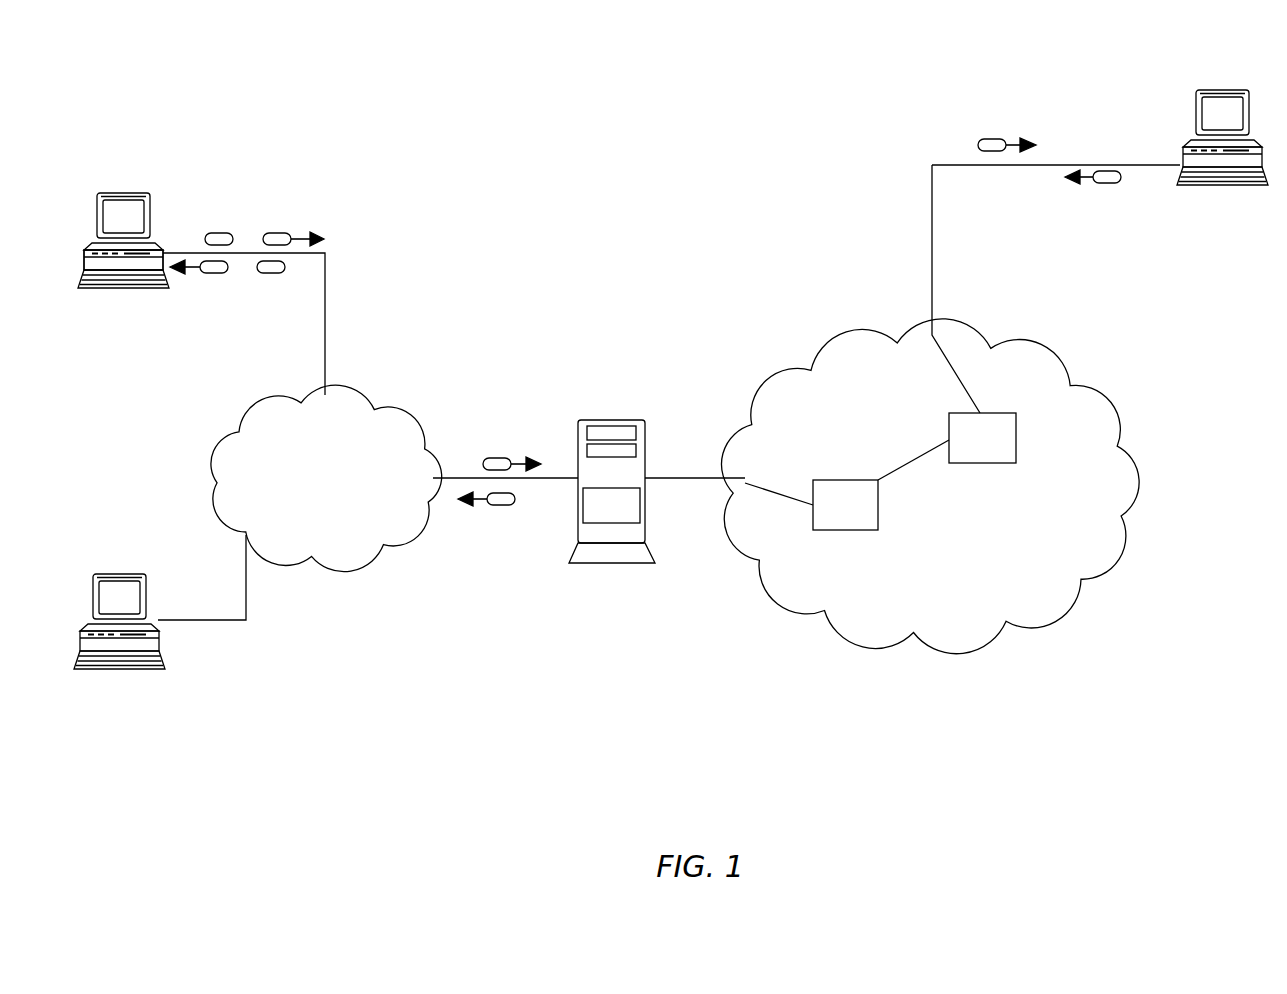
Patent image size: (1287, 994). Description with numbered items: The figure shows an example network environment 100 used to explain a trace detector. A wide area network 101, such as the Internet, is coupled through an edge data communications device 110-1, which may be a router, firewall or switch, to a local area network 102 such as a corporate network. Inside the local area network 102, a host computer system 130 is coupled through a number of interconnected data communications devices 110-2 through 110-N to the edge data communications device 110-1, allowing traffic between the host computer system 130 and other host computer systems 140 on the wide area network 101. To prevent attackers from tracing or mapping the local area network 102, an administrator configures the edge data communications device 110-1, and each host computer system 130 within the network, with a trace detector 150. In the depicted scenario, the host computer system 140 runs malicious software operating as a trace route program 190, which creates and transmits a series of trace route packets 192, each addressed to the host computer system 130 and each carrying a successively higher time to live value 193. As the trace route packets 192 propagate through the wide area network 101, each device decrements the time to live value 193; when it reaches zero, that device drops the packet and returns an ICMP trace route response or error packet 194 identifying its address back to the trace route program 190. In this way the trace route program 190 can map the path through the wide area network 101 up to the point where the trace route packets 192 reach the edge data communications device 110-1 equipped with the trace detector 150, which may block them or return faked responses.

The network environment 100 is at (550, 115).
The wide area network 101 is at (326, 478).
The local area network 102 is at (930, 486).
The edge data communications device 110-1 is at (614, 431).
The data communications device 110-2 is at (845, 505).
The data communications device 110-N is at (982, 438).
The host computer system 130 is at (1218, 105).
The host computer system 140 is at (128, 205).
The trace detector 150 is at (1225, 158).
The trace route program 190 is at (112, 262).
The trace route packets 192 is at (284, 199).
The time to live value 193 is at (212, 238).
The trace route response or error packet 194 is at (237, 297).